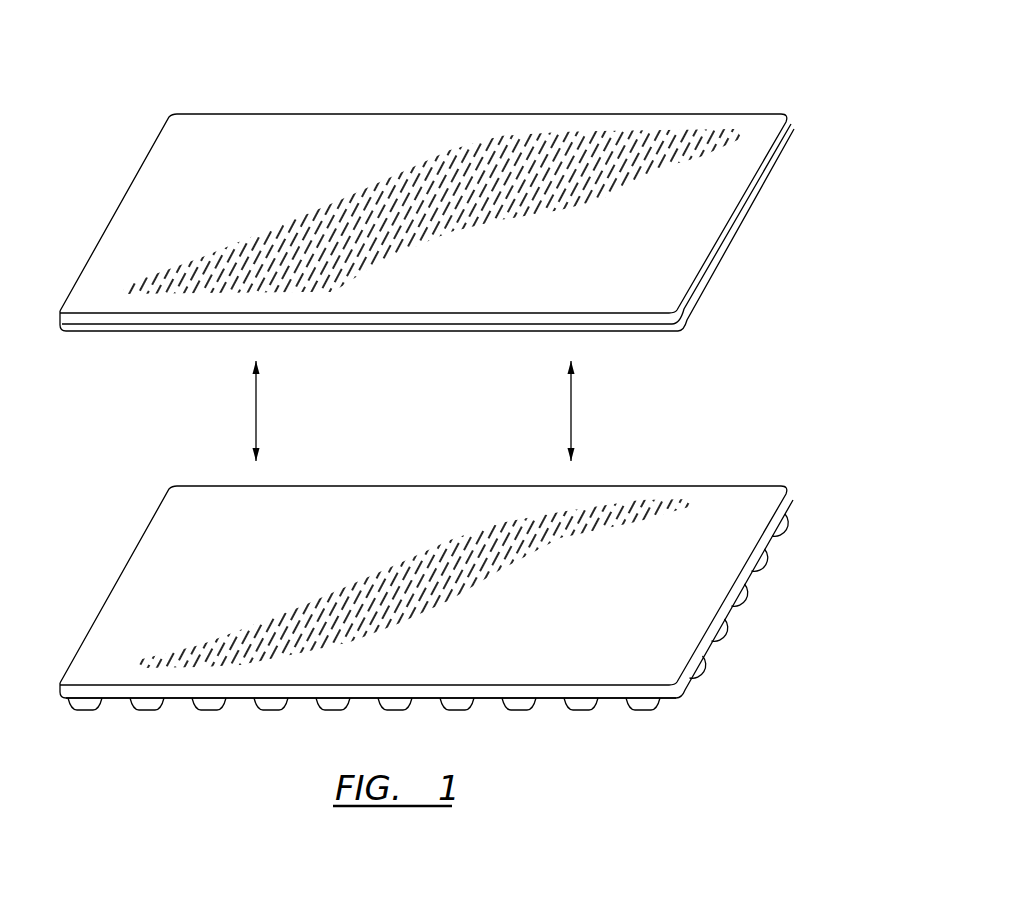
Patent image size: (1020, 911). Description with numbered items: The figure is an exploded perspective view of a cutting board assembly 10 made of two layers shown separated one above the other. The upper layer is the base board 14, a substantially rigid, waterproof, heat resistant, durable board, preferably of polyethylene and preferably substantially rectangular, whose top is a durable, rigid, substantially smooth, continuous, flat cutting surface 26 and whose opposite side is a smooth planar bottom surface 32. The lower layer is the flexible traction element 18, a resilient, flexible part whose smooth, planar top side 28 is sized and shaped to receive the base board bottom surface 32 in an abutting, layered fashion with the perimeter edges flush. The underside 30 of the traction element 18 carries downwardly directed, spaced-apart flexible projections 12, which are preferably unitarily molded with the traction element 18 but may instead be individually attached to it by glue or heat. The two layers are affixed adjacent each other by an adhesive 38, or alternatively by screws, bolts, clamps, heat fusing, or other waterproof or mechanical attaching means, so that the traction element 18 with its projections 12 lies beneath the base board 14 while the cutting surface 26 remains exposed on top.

The cutting board assembly 10 is at (786, 400).
The flexible projections 12 is at (645, 710).
The base board 14 is at (430, 199).
The flexible traction element 18 is at (478, 621).
The cutting surface 26 is at (687, 228).
The top side 28 is at (678, 612).
The underside 30 is at (553, 700).
The bottom surface 32 is at (125, 331).
The adhesive 38 is at (640, 331).